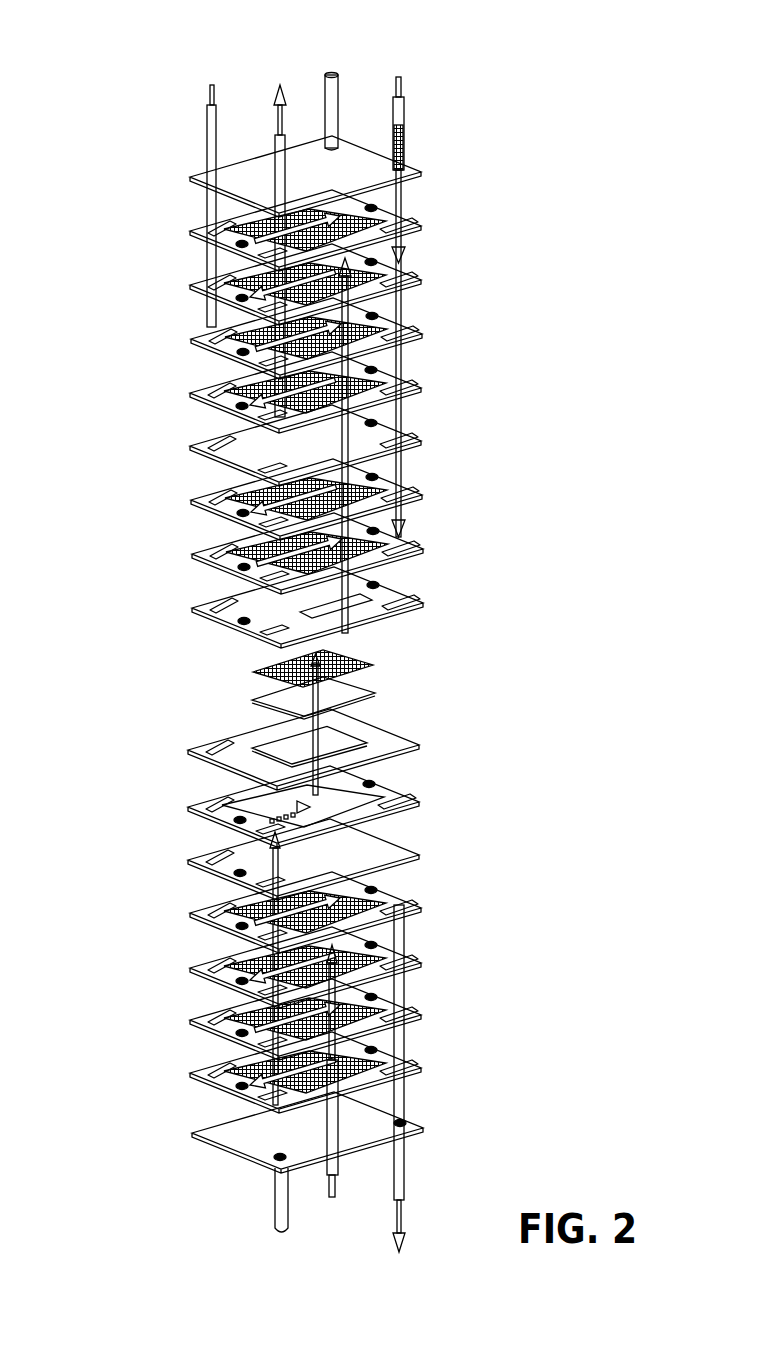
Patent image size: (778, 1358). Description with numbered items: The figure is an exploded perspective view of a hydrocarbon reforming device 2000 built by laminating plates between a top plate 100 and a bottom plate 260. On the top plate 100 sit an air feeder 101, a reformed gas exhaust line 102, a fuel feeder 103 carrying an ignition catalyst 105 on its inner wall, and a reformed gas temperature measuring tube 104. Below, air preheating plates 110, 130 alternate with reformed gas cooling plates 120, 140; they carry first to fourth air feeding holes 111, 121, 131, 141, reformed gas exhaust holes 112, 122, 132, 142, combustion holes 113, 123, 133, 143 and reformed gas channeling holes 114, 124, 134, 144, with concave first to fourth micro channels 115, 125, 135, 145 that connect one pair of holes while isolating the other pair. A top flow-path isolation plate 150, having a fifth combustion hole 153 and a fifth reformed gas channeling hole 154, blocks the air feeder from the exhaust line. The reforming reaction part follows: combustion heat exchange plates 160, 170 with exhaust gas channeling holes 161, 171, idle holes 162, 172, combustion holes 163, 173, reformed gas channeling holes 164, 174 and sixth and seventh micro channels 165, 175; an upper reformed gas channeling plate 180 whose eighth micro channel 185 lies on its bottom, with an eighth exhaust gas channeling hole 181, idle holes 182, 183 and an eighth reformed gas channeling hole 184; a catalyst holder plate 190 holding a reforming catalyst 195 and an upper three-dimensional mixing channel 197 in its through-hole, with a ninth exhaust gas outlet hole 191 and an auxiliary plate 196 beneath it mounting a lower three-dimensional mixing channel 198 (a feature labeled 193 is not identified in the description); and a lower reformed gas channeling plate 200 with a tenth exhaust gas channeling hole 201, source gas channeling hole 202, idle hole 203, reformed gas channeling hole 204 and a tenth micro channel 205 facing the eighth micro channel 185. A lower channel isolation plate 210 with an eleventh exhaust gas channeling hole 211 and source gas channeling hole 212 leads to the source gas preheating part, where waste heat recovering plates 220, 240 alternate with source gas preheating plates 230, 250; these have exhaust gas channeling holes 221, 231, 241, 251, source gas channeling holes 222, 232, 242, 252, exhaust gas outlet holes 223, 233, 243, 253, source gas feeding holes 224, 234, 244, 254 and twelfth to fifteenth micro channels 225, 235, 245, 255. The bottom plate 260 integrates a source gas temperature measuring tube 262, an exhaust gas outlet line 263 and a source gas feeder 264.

The hydrocarbon reforming device 2000 is at (303, 100).
The top plate 100 is at (432, 172).
The air feeder 101 is at (207, 130).
The reformed gas exhaust line 102 is at (272, 167).
The fuel feeder 103 is at (459, 294).
The reformed gas temperature measuring tube 104 is at (348, 80).
The ignition catalyst 105 is at (408, 130).
The air preheating plate 110 is at (330, 225).
The first air feeding hole 111 is at (194, 228).
The first reformed gas exhaust hole 112 is at (243, 256).
The first combustion hole 113 is at (403, 219).
The first reformed gas channeling hole 114 is at (375, 201).
The first micro channel 115 is at (228, 233).
The reformed gas cooling plate 120 is at (330, 279).
The second air feeding hole 121 is at (194, 282).
The second reformed gas exhaust hole 122 is at (243, 310).
The second combustion hole 123 is at (403, 273).
The second reformed gas channeling hole 124 is at (375, 255).
The second micro channel 125 is at (228, 287).
The air preheating plate 130 is at (330, 332).
The third air feeding hole 131 is at (195, 336).
The third reformed gas exhaust hole 132 is at (244, 364).
The third combustion hole 133 is at (404, 327).
The third reformed gas channeling hole 134 is at (376, 309).
The third micro channel 135 is at (229, 341).
The reformed gas cooling plate 140 is at (330, 386).
The fourth air feeding hole 141 is at (194, 390).
The fourth reformed gas exhaust hole 142 is at (243, 418).
The fourth combustion hole 143 is at (403, 381).
The fourth reformed gas channeling hole 144 is at (375, 363).
The fourth micro channel 145 is at (228, 395).
The top flow-path isolation plate 150 is at (382, 440).
The fifth combustion hole 153 is at (403, 434).
The fifth reformed gas channeling hole 154 is at (375, 416).
The combustion heat exchange plate 160 is at (343, 493).
The sixth exhaust gas channeling hole 161 is at (195, 497).
The sixth idle hole 162 is at (244, 525).
The sixth combustion hole 163 is at (404, 488).
The sixth reformed gas channeling hole 164 is at (376, 470).
The sixth micro channel 165 is at (229, 502).
The combustion heat exchange plate 170 is at (329, 548).
The seventh exhaust gas channeling hole 171 is at (196, 551).
The seventh idle hole 172 is at (245, 579).
The seventh combustion hole 173 is at (405, 542).
The seventh reformed gas channeling hole 174 is at (377, 524).
The seventh micro channel 175 is at (230, 556).
The upper reformed gas channeling plate 180 is at (329, 602).
The eighth exhaust gas channeling hole 181 is at (196, 605).
The eighth idle hole 182 is at (245, 633).
The eighth idle hole 183 is at (405, 596).
The eighth reformed gas channeling hole 184 is at (377, 578).
The eighth micro channel 185 is at (282, 603).
The catalyst holder plate 190 is at (325, 737).
The ninth exhaust gas outlet hole 191 is at (207, 742).
The frame plate 193 is at (190, 751).
The reforming catalyst 195 is at (280, 695).
The auxiliary plate 196 is at (345, 748).
The upper three-dimensional mixing channel 197 is at (365, 654).
The lower three-dimensional mixing channel 198 is at (323, 738).
The lower reformed gas channeling plate 200 is at (325, 802).
The tenth exhaust gas channeling hole 201 is at (192, 804).
The tenth source gas channeling hole 202 is at (241, 832).
The tenth idle hole 203 is at (401, 795).
The tenth reformed gas channeling hole 204 is at (373, 777).
The tenth micro channel 205 is at (268, 803).
The lower channel isolation plate 210 is at (330, 859).
The eleventh exhaust gas channeling hole 211 is at (192, 857).
The eleventh source gas channeling hole 212 is at (241, 885).
The waste heat recovering plate 220 is at (330, 909).
The twelfth exhaust gas channeling hole 221 is at (194, 910).
The twelfth source gas channeling hole 222 is at (243, 938).
The twelfth exhaust gas outlet hole 223 is at (403, 901).
The twelfth source gas feeding hole 224 is at (375, 883).
The twelfth micro channel 225 is at (245, 896).
The source gas preheating plate 230 is at (330, 963).
The thirteenth exhaust gas channeling hole 231 is at (194, 965).
The thirteenth source gas channeling hole 232 is at (243, 993).
The thirteenth exhaust gas outlet hole 233 is at (403, 956).
The thirteenth source gas feeding hole 234 is at (375, 938).
The thirteenth micro channel 235 is at (245, 951).
The waste heat recovering plate 240 is at (330, 1016).
The fourteenth exhaust gas channeling hole 241 is at (194, 1017).
The fourteenth source gas channeling hole 242 is at (243, 1045).
The fourteenth exhaust gas outlet hole 243 is at (403, 1008).
The fourteenth source gas feeding hole 244 is at (375, 990).
The fourteenth micro channel 245 is at (245, 1003).
The source gas preheating plate 250 is at (330, 1069).
The fifteenth exhaust gas channeling hole 251 is at (194, 1070).
The fifteenth source gas channeling hole 252 is at (243, 1098).
The fifteenth exhaust gas outlet hole 253 is at (403, 1061).
The fifteenth source gas feeding hole 254 is at (375, 1043).
The fifteenth micro channel 255 is at (245, 1056).
The bottom plate 260 is at (432, 1127).
The source gas temperature measuring tube 262 is at (272, 1200).
The exhaust gas outlet line 263 is at (408, 1163).
The source gas feeder 264 is at (342, 1165).